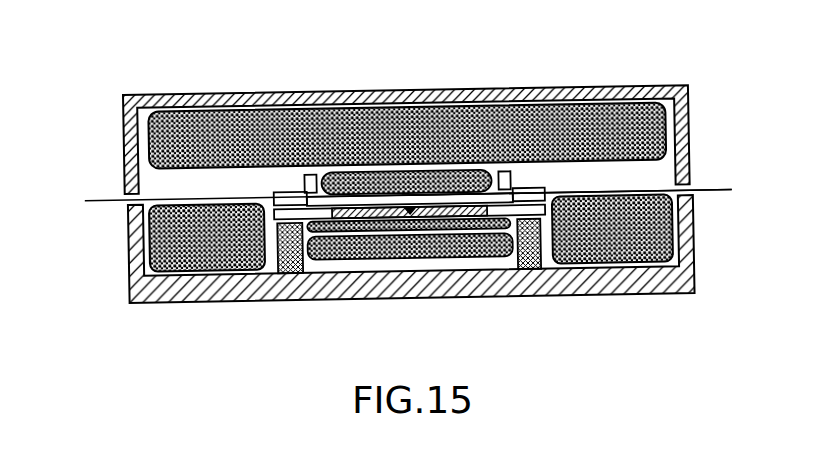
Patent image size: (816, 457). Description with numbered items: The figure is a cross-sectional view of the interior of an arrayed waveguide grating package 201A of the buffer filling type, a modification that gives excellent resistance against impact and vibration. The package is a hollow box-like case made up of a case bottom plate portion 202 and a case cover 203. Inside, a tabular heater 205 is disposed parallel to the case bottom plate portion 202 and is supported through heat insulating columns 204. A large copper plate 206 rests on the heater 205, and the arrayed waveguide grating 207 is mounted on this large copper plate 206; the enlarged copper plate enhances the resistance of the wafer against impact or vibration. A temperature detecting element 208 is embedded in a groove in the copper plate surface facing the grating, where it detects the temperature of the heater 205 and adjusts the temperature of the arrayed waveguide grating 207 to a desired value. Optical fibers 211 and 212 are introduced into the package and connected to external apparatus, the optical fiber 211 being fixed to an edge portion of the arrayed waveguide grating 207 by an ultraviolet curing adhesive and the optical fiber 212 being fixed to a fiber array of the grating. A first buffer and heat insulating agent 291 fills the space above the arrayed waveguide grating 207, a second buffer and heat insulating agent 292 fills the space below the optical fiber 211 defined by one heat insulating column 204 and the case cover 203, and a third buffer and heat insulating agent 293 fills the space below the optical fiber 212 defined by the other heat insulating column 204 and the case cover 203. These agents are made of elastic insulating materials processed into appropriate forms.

The arrayed waveguide grating package 201A is at (571, 66).
The case bottom plate portion 202 is at (655, 294).
The case cover 203 is at (655, 85).
The heat insulating column 204 is at (290, 277).
The heater 205 is at (504, 227).
The large copper plate 206 is at (356, 217).
The arrayed waveguide grating 207 is at (455, 197).
The temperature detecting element 208 is at (406, 219).
The optical fiber 211 is at (102, 197).
The optical fiber 212 is at (708, 186).
The first buffer and heat insulating agent 291 is at (466, 112).
The second buffer and heat insulating agent 292 is at (148, 236).
The third buffer and heat insulating agent 293 is at (662, 223).